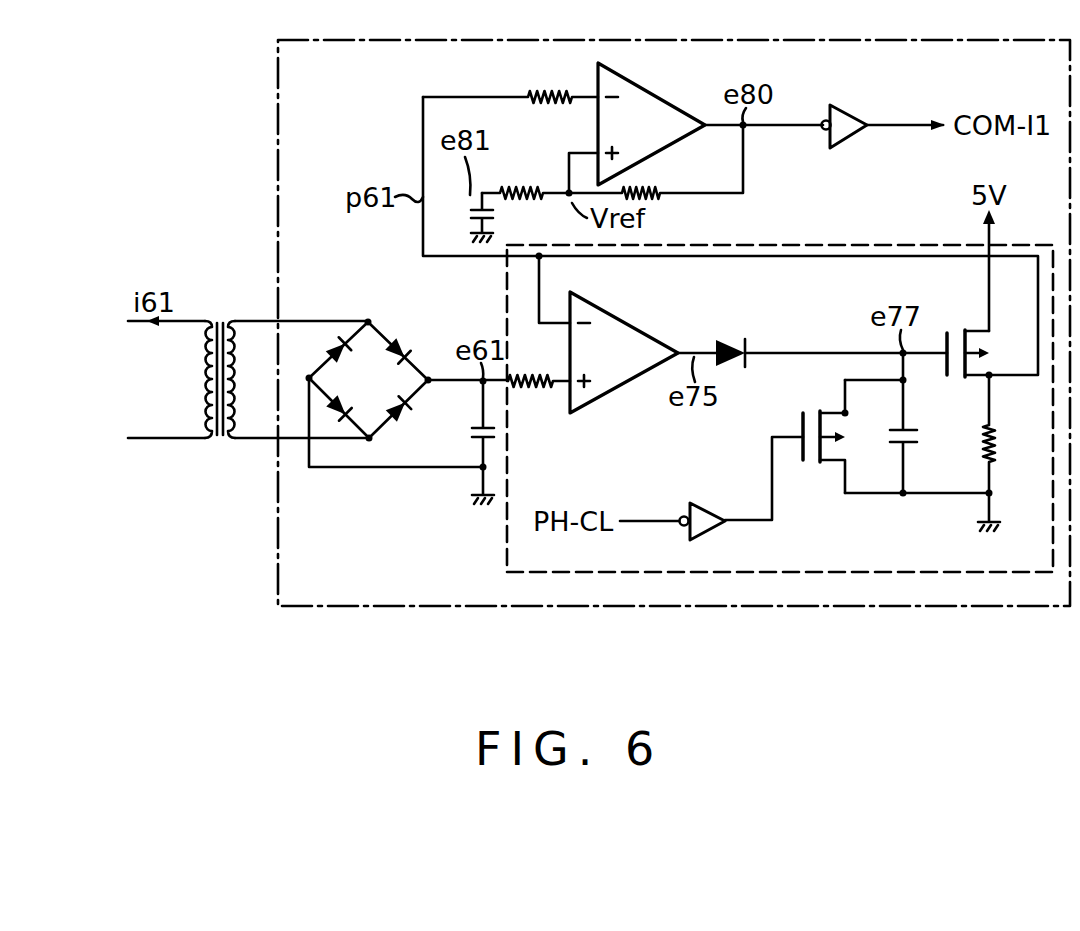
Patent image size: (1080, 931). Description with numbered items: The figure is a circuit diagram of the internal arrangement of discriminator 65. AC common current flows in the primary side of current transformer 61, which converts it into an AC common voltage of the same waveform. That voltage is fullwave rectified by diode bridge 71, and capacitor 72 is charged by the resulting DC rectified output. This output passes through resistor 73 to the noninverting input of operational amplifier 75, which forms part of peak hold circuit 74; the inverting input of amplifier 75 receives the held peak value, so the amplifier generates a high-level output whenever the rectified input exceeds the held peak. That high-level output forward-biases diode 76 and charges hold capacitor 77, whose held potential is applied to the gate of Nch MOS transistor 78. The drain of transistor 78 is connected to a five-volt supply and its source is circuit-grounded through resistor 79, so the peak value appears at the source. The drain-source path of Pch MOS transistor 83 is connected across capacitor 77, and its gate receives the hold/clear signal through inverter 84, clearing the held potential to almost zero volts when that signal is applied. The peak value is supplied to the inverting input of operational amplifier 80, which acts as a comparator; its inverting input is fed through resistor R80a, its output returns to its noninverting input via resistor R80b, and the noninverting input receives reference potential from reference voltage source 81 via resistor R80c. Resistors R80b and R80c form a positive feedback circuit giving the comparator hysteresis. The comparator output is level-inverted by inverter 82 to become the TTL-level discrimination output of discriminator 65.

The current transformer 61 is at (217, 318).
The discriminator 65 is at (278, 547).
The diode bridge 71 is at (397, 340).
The capacitor 72 is at (497, 434).
The resistor 73 is at (532, 376).
The peak hold circuit 74 is at (846, 229).
The operational amplifier 75 is at (625, 322).
The diode 76 is at (731, 340).
The hold capacitor 77 is at (919, 440).
The Nch MOS transistor 78 is at (956, 328).
The resistor 79 is at (997, 442).
The operational amplifier 80 is at (668, 102).
The reference voltage source 81 is at (502, 213).
The inverter 82 is at (857, 139).
The Pch MOS transistor 83 is at (822, 468).
The inverter 84 is at (718, 506).
The resistor R80a is at (510, 79).
The resistor R80b is at (645, 191).
The resistor R80c is at (525, 177).